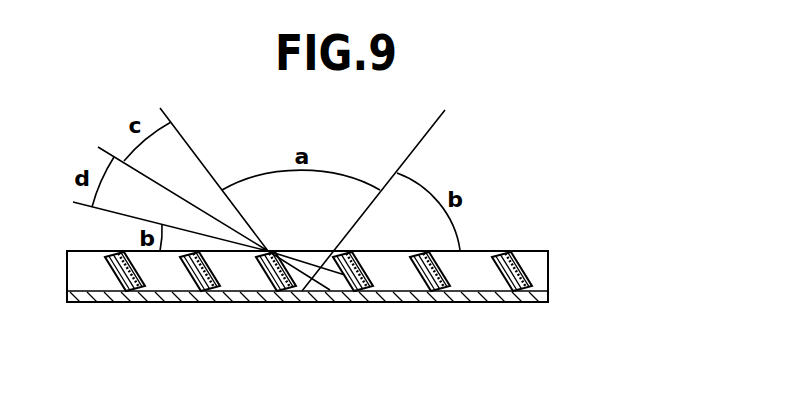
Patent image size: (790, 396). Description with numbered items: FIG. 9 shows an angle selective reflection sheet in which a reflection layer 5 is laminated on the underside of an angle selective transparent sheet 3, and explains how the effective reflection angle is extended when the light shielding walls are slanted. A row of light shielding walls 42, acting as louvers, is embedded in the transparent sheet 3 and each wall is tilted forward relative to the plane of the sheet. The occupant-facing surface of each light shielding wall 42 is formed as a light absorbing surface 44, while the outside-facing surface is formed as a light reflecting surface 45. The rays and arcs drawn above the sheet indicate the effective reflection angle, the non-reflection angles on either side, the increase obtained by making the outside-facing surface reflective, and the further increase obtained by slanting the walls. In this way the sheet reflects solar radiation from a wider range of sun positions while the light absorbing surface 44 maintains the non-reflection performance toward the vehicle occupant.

The angle selective transparent sheet 3 is at (548, 272).
The reflection layer 5 is at (513, 303).
The light shielding wall 42 is at (503, 253).
The light absorbing surface 44 is at (527, 252).
The light reflecting surface 45 is at (493, 268).